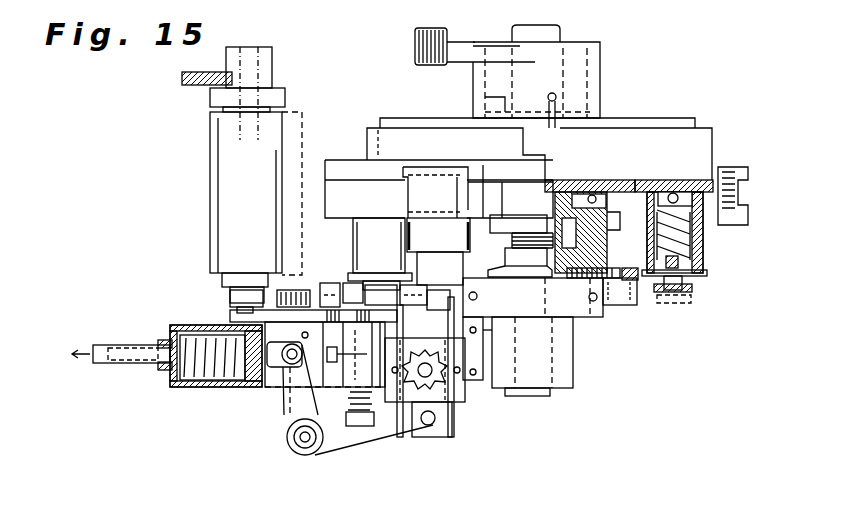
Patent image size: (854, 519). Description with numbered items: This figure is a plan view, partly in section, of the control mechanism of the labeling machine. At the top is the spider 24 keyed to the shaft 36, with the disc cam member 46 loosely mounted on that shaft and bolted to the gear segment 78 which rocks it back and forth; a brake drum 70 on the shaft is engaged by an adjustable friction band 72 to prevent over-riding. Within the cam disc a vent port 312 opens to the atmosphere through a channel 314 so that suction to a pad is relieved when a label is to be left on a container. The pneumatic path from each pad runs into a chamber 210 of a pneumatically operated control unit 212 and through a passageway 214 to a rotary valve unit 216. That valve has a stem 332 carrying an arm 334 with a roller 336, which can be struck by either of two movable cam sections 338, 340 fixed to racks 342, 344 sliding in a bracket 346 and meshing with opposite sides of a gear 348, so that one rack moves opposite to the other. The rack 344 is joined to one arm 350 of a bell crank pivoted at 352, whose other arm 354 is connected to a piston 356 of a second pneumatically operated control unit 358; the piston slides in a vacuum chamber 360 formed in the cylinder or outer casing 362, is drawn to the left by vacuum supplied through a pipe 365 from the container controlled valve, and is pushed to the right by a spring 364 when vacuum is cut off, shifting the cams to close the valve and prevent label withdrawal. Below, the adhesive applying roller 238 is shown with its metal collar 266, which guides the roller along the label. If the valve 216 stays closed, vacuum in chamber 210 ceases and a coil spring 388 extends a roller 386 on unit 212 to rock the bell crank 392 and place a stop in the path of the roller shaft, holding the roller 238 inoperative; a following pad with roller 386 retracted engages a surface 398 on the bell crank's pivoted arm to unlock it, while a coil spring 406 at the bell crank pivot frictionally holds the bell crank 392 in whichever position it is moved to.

The spider 24 is at (712, 143).
The shaft 36 is at (560, 34).
The disc cam member 46 is at (688, 118).
The brake drum 70 is at (560, 314).
The adjustable friction band 72 is at (580, 312).
The gear segment 78 is at (415, 45).
The chamber 210 is at (740, 191).
The pneumatically operated control unit 212 is at (722, 263).
The passageway 214 is at (640, 184).
The rotary valve unit 216 is at (590, 184).
The adhesive applying roller 238 is at (212, 167).
The metal collar 266 is at (212, 99).
The vent port 312 is at (570, 162).
The channel 314 is at (556, 100).
The stem 332 is at (600, 245).
The arm 334 is at (634, 294).
The roller 336 is at (406, 287).
The cam section 338 is at (448, 330).
The cam section 340 is at (440, 282).
The rack 342 is at (400, 400).
The rack 344 is at (455, 432).
The bracket 346 is at (468, 400).
The gear 348 is at (470, 362).
The bell crank arm 350 is at (310, 455).
The pivot 352 is at (297, 448).
The bell crank arm 354 is at (285, 402).
The piston 356 is at (265, 372).
The pneumatically operated control unit 358 is at (178, 402).
The vacuum chamber 360 is at (208, 335).
The cylinder or outer casing 362 is at (170, 338).
The spring 364 is at (200, 385).
The pipe 365 is at (122, 362).
The roller 386 is at (372, 276).
The coil spring 388 is at (704, 236).
The bell crank 392 is at (315, 286).
The surface 398 is at (348, 283).
The coil spring 406 is at (362, 420).